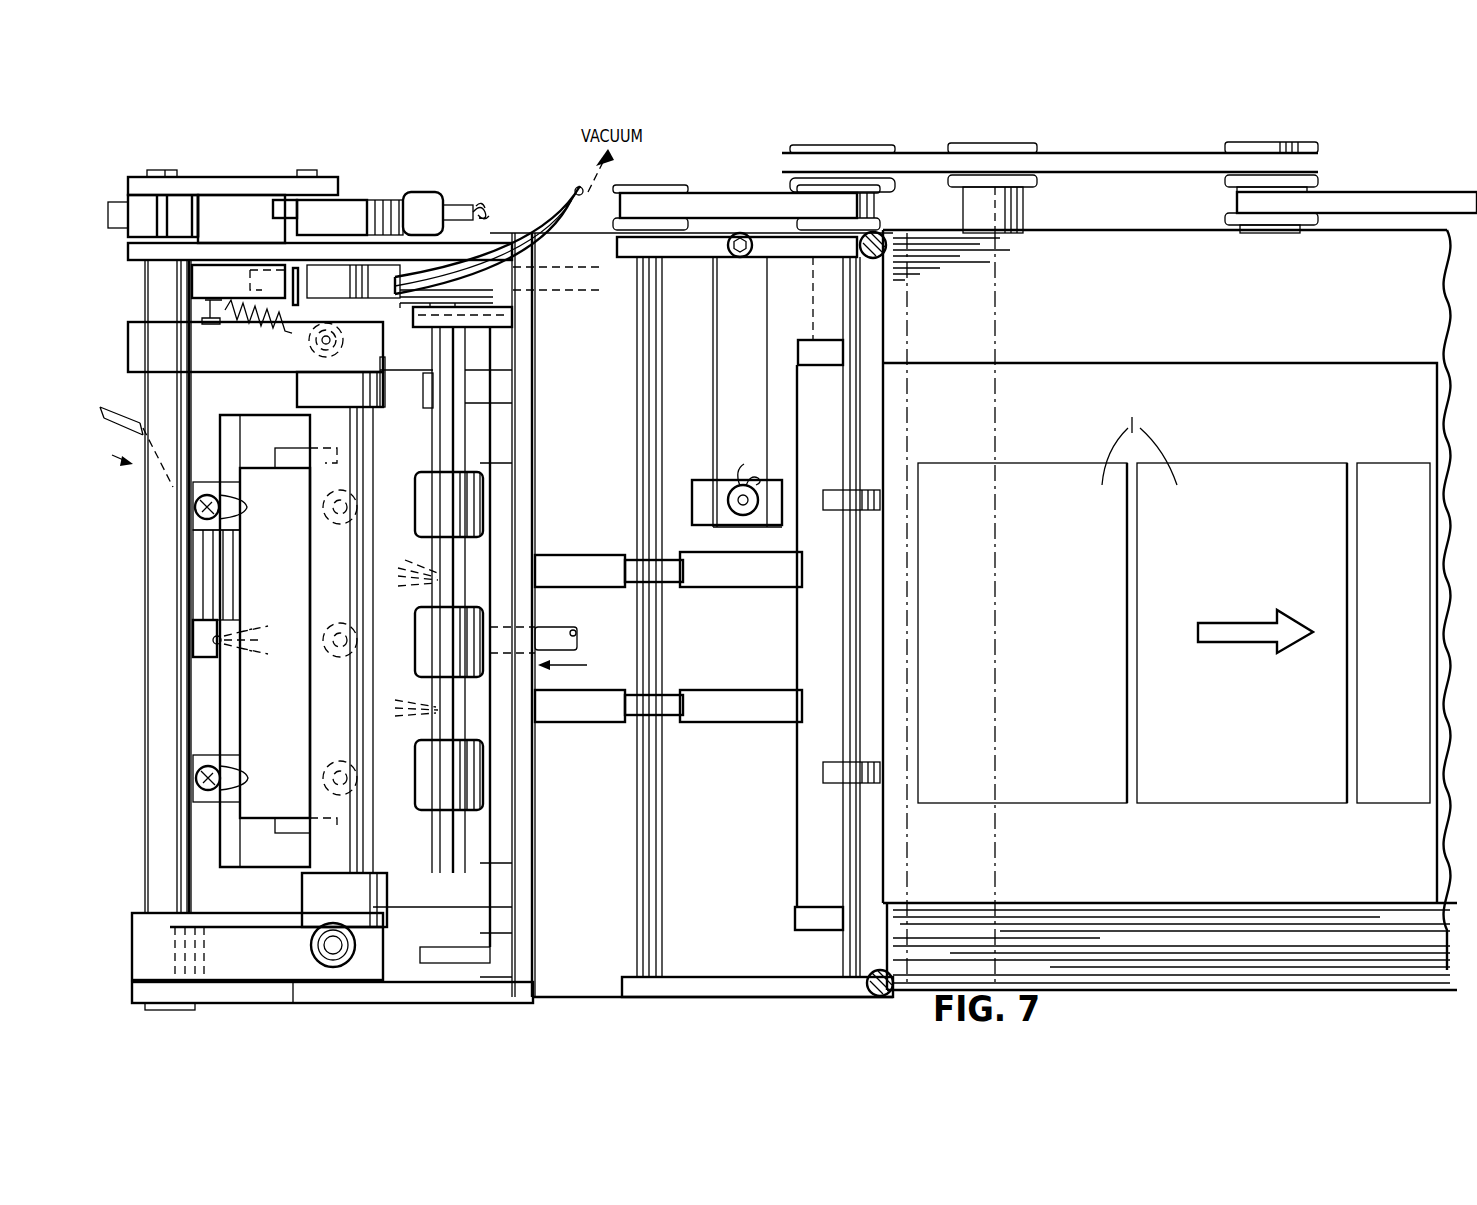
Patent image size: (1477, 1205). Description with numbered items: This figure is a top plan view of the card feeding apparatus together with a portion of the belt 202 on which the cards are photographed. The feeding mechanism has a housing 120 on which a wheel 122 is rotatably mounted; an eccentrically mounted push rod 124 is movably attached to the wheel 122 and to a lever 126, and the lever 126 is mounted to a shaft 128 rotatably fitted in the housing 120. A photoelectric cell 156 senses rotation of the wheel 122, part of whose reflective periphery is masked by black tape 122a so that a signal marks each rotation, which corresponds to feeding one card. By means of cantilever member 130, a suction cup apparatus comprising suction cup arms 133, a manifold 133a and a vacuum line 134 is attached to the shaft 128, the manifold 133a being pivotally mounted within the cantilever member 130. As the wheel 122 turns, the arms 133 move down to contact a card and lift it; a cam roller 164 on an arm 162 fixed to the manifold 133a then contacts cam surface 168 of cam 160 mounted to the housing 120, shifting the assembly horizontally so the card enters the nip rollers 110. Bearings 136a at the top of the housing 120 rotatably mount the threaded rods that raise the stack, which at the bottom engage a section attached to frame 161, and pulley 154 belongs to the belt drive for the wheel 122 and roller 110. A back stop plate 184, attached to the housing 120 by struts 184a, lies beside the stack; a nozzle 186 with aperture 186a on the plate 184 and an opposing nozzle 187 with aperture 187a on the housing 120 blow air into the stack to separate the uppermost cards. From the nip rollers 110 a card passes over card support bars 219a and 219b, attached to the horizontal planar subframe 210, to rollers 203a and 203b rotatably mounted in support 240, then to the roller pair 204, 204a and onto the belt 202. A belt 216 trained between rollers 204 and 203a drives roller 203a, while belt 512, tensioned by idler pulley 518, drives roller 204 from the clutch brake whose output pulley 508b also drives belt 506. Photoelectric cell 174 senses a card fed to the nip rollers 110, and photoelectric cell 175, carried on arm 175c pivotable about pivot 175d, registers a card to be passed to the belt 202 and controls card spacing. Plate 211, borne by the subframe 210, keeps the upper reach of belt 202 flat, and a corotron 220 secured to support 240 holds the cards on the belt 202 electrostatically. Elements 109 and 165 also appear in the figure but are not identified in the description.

The pivot clamp 109 is at (247, 507).
The nip roller 110 is at (427, 635).
The housing 120 is at (135, 252).
The wheel 122 is at (370, 200).
The black tape 122a is at (280, 206).
The push rod 124 is at (190, 177).
The lever 126 is at (138, 212).
The shaft 128 is at (152, 512).
The cantilever member 130 is at (256, 375).
The suction cup arm 133 is at (331, 520).
The manifold 133a is at (327, 577).
The vacuum line 134 is at (557, 215).
The bearings 136a is at (322, 363).
The pulley 154 is at (517, 297).
The photoelectric cell 156 is at (440, 198).
The cam 160 is at (225, 260).
The frame 161 is at (523, 510).
The arm 162 is at (450, 330).
The cam roller 164 is at (300, 278).
The stops 165 is at (285, 462).
The cam surface 168 is at (256, 331).
The photoelectric cell 174 is at (535, 600).
The photoelectric cell 175 is at (740, 490).
The arm 175c is at (724, 357).
The pivot 175d is at (750, 235).
The back stop plate 184 is at (223, 713).
The struts 184a is at (500, 433).
The nozzle 186 is at (130, 405).
The aperture 186a is at (228, 645).
The nozzle 187 is at (578, 633).
The aperture 187a is at (445, 570).
The belt 202 is at (1228, 378).
The roller 203a is at (684, 572).
The roller 203b is at (637, 558).
The roller 204 is at (806, 353).
The companion roller 204a is at (880, 498).
The horizontal planar subframe 210 is at (568, 980).
The plate 211 is at (1243, 973).
The belt 216 is at (721, 200).
The card support bar 219a is at (603, 565).
The card support bar 219b is at (720, 578).
The corotron 220 is at (968, 323).
The support 240 is at (788, 250).
The belt 506 is at (1380, 197).
The output pulley 508b is at (1317, 143).
The belt 512 is at (1137, 157).
The idler pulley 518 is at (988, 143).